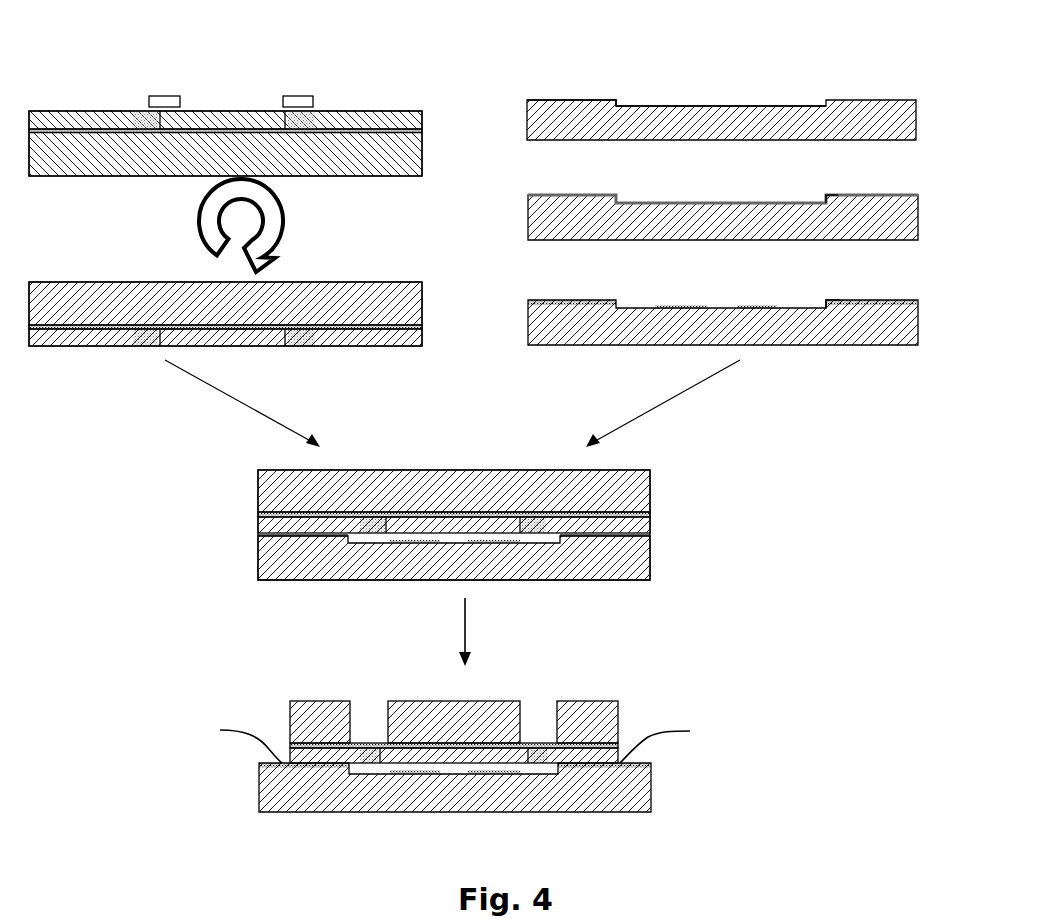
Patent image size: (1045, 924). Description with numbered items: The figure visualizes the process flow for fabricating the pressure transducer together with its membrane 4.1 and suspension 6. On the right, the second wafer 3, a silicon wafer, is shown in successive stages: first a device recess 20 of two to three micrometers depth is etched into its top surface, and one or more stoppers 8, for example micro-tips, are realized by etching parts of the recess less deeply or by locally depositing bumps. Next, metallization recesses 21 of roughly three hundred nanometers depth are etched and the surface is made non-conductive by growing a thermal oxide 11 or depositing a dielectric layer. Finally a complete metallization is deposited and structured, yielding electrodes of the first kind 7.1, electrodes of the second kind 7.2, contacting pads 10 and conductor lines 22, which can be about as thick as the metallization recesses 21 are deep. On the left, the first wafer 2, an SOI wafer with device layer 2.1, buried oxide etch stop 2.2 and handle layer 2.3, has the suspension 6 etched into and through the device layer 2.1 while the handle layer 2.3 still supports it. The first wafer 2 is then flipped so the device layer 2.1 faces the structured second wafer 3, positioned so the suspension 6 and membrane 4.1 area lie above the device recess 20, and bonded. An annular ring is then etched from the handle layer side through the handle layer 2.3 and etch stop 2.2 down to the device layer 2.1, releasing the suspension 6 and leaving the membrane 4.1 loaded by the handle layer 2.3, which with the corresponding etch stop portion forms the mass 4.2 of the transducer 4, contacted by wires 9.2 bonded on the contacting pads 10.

The first wafer 2 is at (378, 405).
The device layer 2.1 is at (102, 114).
The etch stop (buried oxide layer) 2.2 is at (102, 129).
The handle layer 2.3 is at (132, 143).
The second wafer 3 is at (721, 302).
The sensor component 4 is at (497, 728).
The membrane 4.1 is at (444, 755).
The mass 4.2 is at (505, 724).
The suspension 6 is at (141, 119).
The electrodes of the first kind 7.1 is at (757, 306).
The electrodes of the second kind 7.2 is at (779, 306).
The stopper 8 is at (704, 105).
The wires 9.2 is at (672, 731).
The contacting pads 10 is at (896, 298).
The thermal oxide 11 is at (640, 205).
The device recess 20 is at (646, 101).
The metallization recesses 21 is at (846, 197).
The conductor lines 22 is at (850, 301).